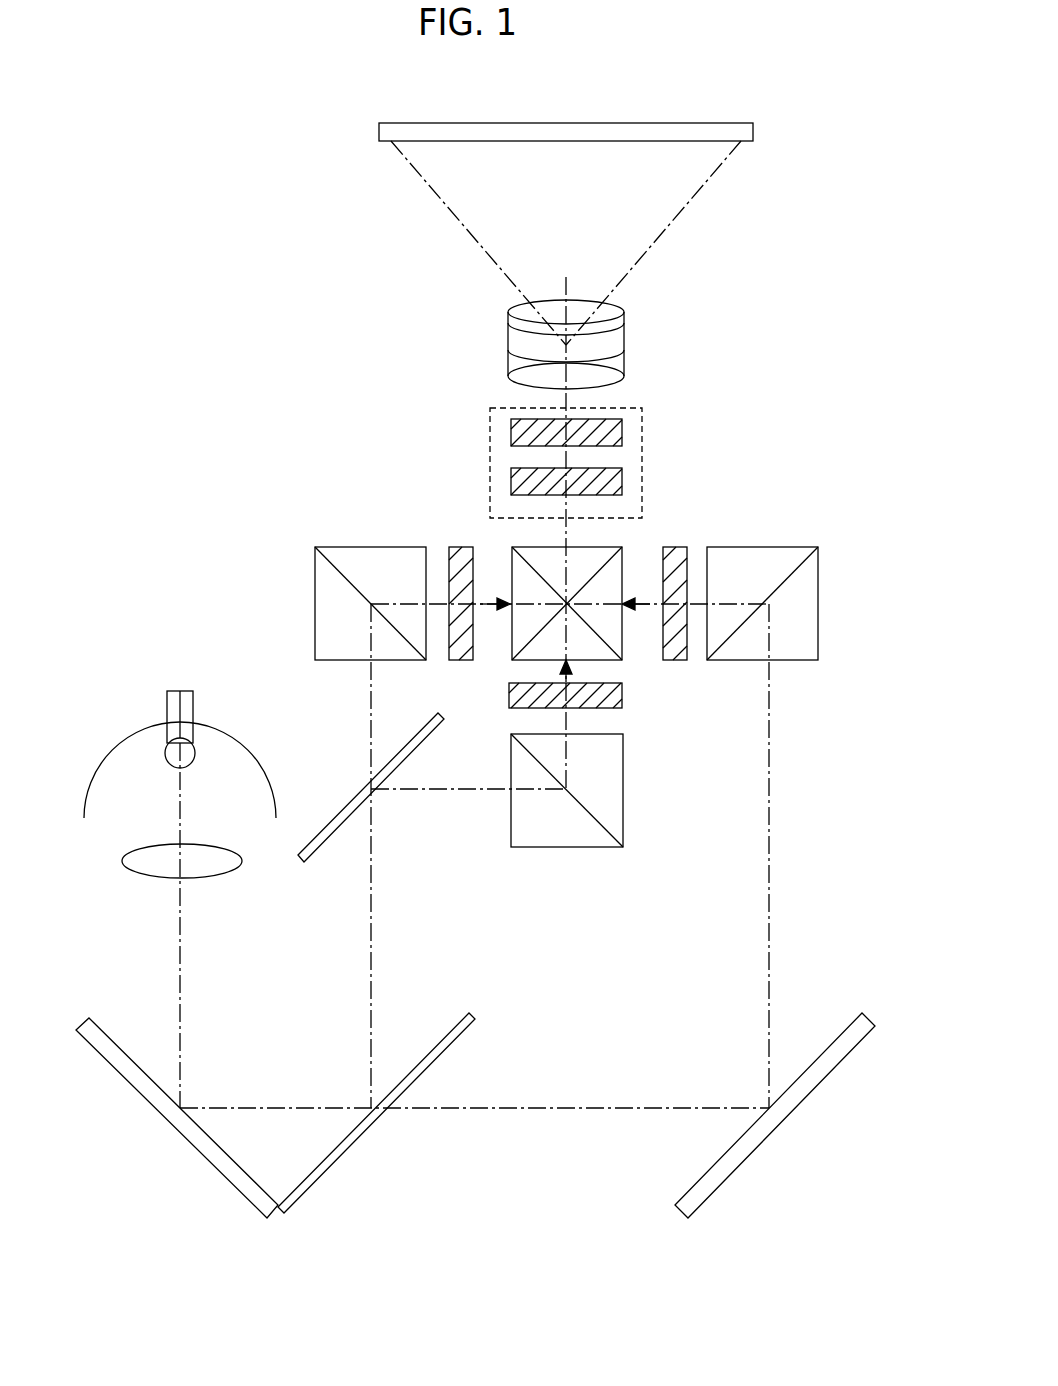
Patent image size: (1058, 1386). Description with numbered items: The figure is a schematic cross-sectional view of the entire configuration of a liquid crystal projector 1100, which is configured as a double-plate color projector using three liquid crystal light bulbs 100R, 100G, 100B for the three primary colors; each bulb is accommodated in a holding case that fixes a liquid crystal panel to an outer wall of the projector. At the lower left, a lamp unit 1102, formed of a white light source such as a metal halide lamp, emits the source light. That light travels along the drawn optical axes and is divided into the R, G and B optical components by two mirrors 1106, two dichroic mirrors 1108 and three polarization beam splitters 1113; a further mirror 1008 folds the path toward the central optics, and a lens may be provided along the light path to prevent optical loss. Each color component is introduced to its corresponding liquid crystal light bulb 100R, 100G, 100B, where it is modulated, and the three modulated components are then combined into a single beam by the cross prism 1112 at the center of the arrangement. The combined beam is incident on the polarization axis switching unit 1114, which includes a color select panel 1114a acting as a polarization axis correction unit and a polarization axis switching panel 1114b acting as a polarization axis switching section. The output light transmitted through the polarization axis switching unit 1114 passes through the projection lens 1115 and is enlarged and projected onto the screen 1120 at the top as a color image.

The liquid crystal projector 1100 is at (172, 330).
The screen 1120 is at (693, 132).
The projection lens 1115 is at (497, 388).
The polarization axis switching unit 1114 is at (641, 454).
The color select panel 1114a is at (608, 470).
The polarization axis switching panel 1114b is at (608, 422).
The polarization beam splitter 1113 is at (361, 565).
The cross prism 1112 is at (593, 555).
The liquid crystal light bulb 100R is at (678, 553).
The liquid crystal light bulb 100G is at (615, 697).
The liquid crystal light bulb 100B is at (470, 660).
The lamp unit 1102 is at (105, 757).
The reflection mirror 1008 is at (327, 835).
The mirror 1106 is at (185, 1125).
The dichroic mirror 1108 is at (345, 1147).